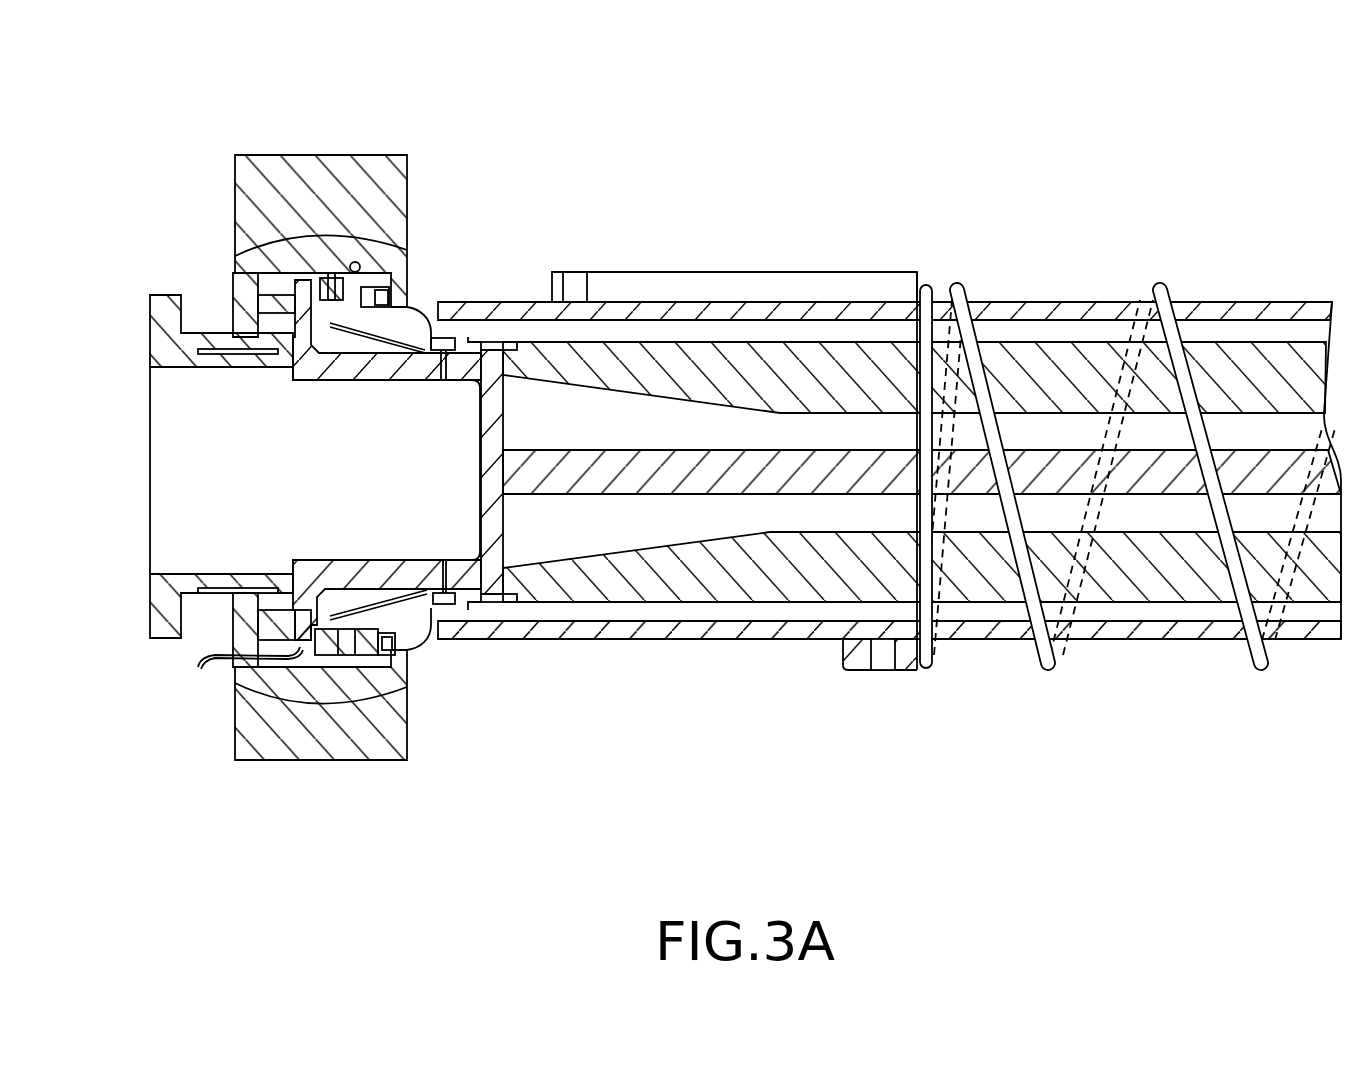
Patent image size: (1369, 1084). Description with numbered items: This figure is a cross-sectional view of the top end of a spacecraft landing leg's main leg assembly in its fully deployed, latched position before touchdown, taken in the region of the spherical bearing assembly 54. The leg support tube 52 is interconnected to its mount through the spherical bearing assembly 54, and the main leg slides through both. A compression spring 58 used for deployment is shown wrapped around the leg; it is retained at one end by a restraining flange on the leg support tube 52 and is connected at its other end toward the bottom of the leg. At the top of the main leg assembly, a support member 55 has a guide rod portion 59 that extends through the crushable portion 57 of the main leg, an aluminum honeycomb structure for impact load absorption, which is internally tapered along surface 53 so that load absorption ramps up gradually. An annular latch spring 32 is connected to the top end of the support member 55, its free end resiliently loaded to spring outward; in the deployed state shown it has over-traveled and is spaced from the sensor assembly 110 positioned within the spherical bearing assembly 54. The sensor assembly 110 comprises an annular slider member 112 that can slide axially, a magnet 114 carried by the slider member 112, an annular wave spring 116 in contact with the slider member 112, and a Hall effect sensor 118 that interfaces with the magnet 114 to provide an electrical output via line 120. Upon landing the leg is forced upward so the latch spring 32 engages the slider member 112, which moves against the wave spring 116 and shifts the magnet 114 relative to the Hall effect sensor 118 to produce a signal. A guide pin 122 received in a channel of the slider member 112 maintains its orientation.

The latch spring 32 is at (483, 338).
The leg support tube 52 is at (690, 637).
The internally tapered surface 53 is at (622, 386).
The spherical bearing assembly 54 is at (422, 158).
The support member 55 is at (502, 332).
The crushable portion 57 is at (1153, 587).
The compression spring 58 is at (1160, 285).
The guide rod portion 59 is at (635, 460).
The sensor assembly 110 is at (361, 320).
The slider member 112 is at (307, 285).
The magnet 114 is at (330, 660).
The wave spring 116 is at (258, 300).
The Hall effect sensor 118 is at (295, 660).
The line 120 is at (220, 670).
The guide pin 122 is at (333, 285).